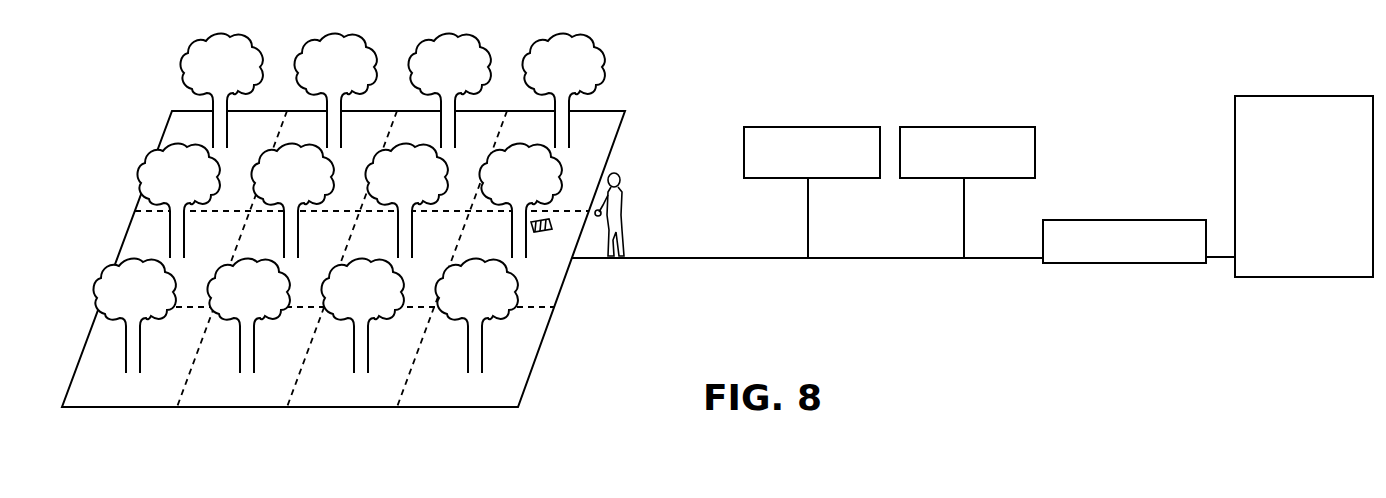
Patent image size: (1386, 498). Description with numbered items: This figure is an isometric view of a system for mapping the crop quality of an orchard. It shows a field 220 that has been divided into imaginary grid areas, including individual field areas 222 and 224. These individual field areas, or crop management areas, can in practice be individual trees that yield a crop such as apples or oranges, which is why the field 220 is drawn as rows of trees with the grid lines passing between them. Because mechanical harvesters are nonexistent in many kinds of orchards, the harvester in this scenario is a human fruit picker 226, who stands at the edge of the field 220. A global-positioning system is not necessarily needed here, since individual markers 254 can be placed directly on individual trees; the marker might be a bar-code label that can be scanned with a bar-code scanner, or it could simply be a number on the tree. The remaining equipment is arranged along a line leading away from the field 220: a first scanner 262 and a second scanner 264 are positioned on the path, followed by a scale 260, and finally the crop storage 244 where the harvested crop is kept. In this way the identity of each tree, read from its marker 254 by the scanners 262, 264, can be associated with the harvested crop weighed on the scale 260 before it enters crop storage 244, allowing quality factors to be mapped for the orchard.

The field 220 is at (626, 139).
The individual field area 222 is at (506, 216).
The individual field area 224 is at (606, 62).
The human fruit picker 226 is at (622, 190).
The marker 254 is at (549, 229).
The scale 260 is at (1140, 220).
The first scanner 262 is at (812, 127).
The second scanner 264 is at (963, 127).
The crop storage 244 is at (1307, 96).